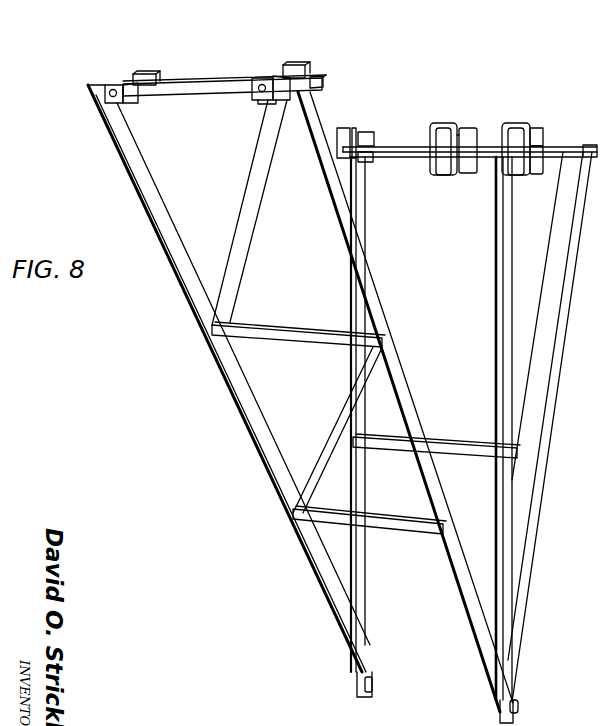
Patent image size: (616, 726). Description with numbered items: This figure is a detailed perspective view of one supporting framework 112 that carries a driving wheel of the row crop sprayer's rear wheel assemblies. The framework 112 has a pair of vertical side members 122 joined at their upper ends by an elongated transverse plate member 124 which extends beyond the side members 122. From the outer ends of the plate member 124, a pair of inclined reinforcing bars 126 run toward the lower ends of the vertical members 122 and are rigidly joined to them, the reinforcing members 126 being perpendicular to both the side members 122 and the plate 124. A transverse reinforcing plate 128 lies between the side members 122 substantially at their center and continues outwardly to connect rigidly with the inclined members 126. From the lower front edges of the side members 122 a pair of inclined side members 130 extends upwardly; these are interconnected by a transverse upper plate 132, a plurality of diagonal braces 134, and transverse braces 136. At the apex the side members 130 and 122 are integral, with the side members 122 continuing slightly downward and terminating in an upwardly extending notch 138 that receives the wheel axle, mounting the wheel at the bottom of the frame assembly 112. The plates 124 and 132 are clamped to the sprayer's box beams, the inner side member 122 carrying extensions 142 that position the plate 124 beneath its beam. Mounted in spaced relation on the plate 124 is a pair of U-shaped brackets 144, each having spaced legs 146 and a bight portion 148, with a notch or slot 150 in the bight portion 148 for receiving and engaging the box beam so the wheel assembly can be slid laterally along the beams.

The supporting framework 112 is at (208, 371).
The vertical side member 122 is at (499, 317).
The transverse plate member 124 is at (422, 155).
The inclined reinforcing bar 126 is at (553, 300).
The transverse reinforcing plate 128 is at (466, 442).
The inclined side member 130 is at (396, 337).
The transverse upper plate 132 is at (212, 82).
The diagonal brace 134 is at (257, 228).
The transverse brace 136 is at (290, 337).
The upwardly extending notch 138 is at (518, 707).
The extension 142 is at (345, 130).
The bracket 144 is at (540, 138).
The spaced leg 146 is at (535, 168).
The bight portion 148 is at (504, 128).
The notch or slot 150 is at (530, 130).